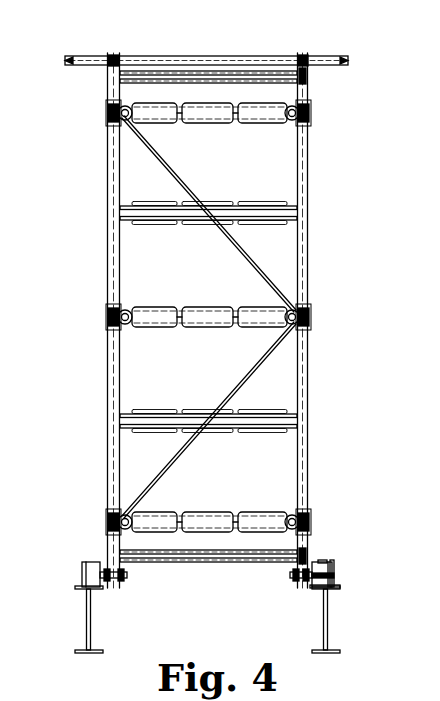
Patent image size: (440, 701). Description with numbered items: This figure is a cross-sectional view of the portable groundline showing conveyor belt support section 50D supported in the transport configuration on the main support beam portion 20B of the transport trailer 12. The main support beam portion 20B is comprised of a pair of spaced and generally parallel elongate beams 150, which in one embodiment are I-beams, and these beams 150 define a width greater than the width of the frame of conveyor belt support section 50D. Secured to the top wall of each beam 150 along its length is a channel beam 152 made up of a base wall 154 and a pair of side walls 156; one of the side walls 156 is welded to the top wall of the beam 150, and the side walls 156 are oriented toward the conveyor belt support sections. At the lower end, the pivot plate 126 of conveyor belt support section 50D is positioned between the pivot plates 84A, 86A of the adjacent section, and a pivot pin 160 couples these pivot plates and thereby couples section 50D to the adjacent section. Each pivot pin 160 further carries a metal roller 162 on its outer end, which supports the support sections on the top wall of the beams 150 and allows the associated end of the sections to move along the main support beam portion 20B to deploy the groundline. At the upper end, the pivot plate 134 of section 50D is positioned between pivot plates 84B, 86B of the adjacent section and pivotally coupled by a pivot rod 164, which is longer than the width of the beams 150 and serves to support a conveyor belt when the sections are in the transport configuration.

The transport trailer 12 is at (352, 546).
The main support beam portion 20B is at (331, 620).
The conveyor belt support section 50D is at (308, 358).
The pivot plate 84A is at (312, 566).
The pivot plate 84B is at (310, 68).
The pivot plate 86A is at (292, 575).
The pivot plate 86B is at (298, 72).
The pivot plate 126 is at (303, 580).
The pivot plate 134 is at (304, 56).
The elongate beam 150 is at (87, 621).
The channel beam 152 is at (335, 565).
The base wall 154 is at (334, 575).
The side wall 156 is at (327, 560).
The pivot pin 160 is at (122, 580).
The metal roller 162 is at (92, 565).
The pivot rod 164 is at (172, 57).